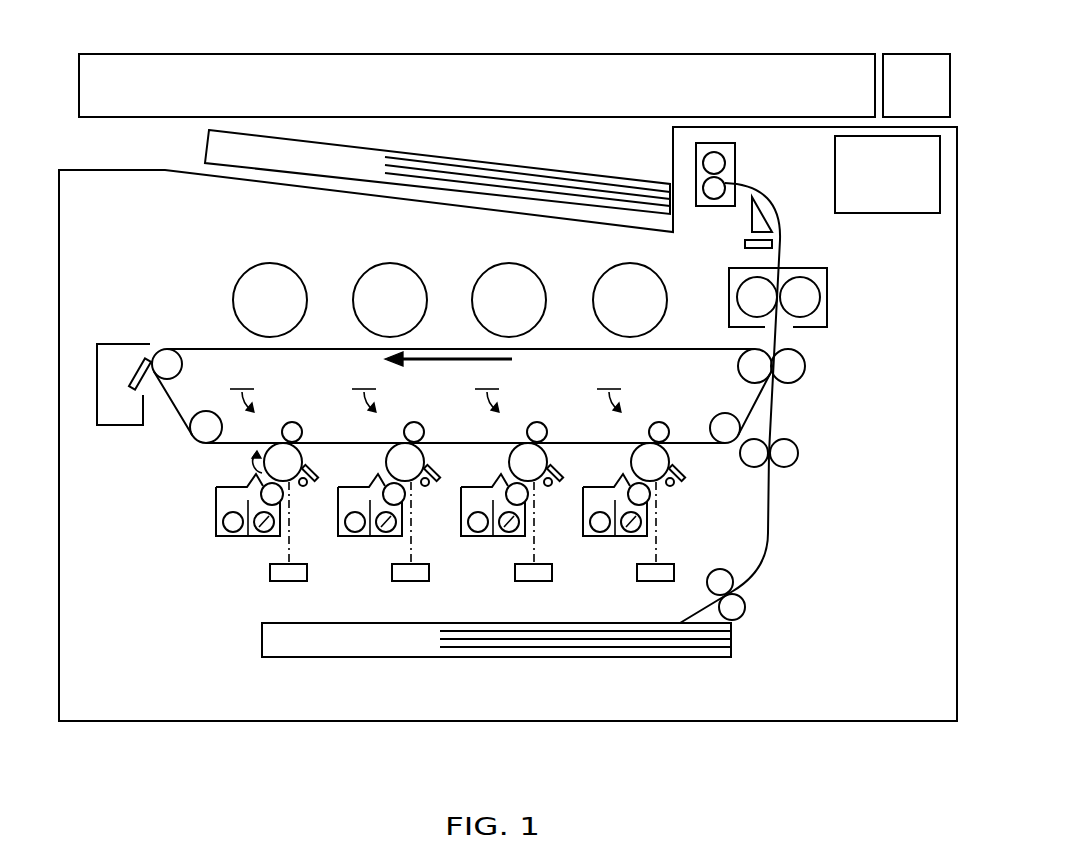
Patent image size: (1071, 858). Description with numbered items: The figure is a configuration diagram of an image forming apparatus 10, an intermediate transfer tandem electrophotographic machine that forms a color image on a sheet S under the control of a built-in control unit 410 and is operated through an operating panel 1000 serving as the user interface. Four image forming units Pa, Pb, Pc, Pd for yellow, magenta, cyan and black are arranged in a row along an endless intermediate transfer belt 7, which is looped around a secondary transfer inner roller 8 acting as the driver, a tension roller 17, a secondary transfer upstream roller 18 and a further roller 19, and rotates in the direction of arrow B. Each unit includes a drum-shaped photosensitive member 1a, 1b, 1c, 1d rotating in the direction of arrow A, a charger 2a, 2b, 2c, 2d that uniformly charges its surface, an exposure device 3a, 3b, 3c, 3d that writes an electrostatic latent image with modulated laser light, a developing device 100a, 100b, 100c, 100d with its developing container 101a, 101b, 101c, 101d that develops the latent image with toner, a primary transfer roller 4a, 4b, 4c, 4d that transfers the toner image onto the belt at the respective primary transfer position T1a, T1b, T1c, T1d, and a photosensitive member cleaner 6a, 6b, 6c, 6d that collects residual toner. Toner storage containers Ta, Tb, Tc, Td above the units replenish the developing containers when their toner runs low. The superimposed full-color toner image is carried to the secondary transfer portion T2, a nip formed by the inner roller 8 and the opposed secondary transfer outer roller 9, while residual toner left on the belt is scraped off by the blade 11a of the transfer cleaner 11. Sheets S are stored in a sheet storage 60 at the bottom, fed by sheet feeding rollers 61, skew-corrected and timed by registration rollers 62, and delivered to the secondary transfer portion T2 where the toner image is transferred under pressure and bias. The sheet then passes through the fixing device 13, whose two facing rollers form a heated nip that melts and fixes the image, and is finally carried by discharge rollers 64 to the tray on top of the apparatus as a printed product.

The operating panel 1000 is at (932, 52).
The image forming apparatus 10 is at (71, 169).
The intermediate transfer belt 7 is at (219, 347).
The secondary transfer inner roller 8 is at (735, 363).
The secondary transfer outer roller 9 is at (805, 375).
The transfer cleaner 11 is at (108, 342).
The blade 11a is at (132, 392).
The fixing device 13 is at (828, 302).
The tension roller 17 is at (165, 349).
The secondary transfer upstream roller 18 is at (200, 442).
The stretching roller 19 is at (720, 417).
The sheet storage 60 is at (261, 642).
The sheet feeding rollers 61 is at (746, 600).
The registration rollers 62 is at (797, 465).
The discharge roller 64 is at (736, 165).
The control unit 410 is at (893, 214).
The sheet S is at (462, 653).
The arrow B is at (457, 367).
The arrow A is at (246, 465).
The secondary transfer portion T2 is at (778, 380).
The toner storage container Ta is at (306, 298).
The toner storage container Tb is at (426, 298).
The toner storage container Tc is at (545, 298).
The toner storage container Td is at (666, 298).
The image forming unit Pa is at (242, 388).
The image forming unit Pb is at (364, 388).
The image forming unit Pc is at (487, 388).
The image forming unit Pd is at (609, 388).
The photosensitive member 1a is at (303, 460).
The photosensitive member 1b is at (425, 460).
The photosensitive member 1c is at (548, 460).
The photosensitive member 1d is at (670, 460).
The charger 2a is at (290, 512).
The charger 2b is at (412, 512).
The charger 2c is at (535, 512).
The charger 2d is at (660, 500).
The exposure device 3a is at (287, 582).
The exposure device 3b is at (409, 582).
The exposure device 3c is at (532, 582).
The exposure device 3d is at (653, 582).
The primary transfer roller 4a is at (289, 423).
The primary transfer roller 4b is at (411, 423).
The primary transfer roller 4c is at (534, 423).
The primary transfer roller 4d is at (656, 423).
The photosensitive member cleaner 6a is at (315, 478).
The photosensitive member cleaner 6b is at (437, 478).
The photosensitive member cleaner 6c is at (560, 478).
The photosensitive member cleaner 6d is at (684, 478).
The developing device 100a is at (233, 538).
The developing device 100b is at (355, 538).
The developing device 100c is at (478, 538).
The developing device 100d is at (594, 538).
The developing container 101a is at (265, 537).
The developing container 101b is at (387, 537).
The developing container 101c is at (510, 537).
The developing container 101d is at (630, 537).
The primary transfer portion T1a is at (300, 441).
The primary transfer portion T1b is at (422, 441).
The primary transfer portion T1c is at (545, 441).
The primary transfer portion T1d is at (667, 441).